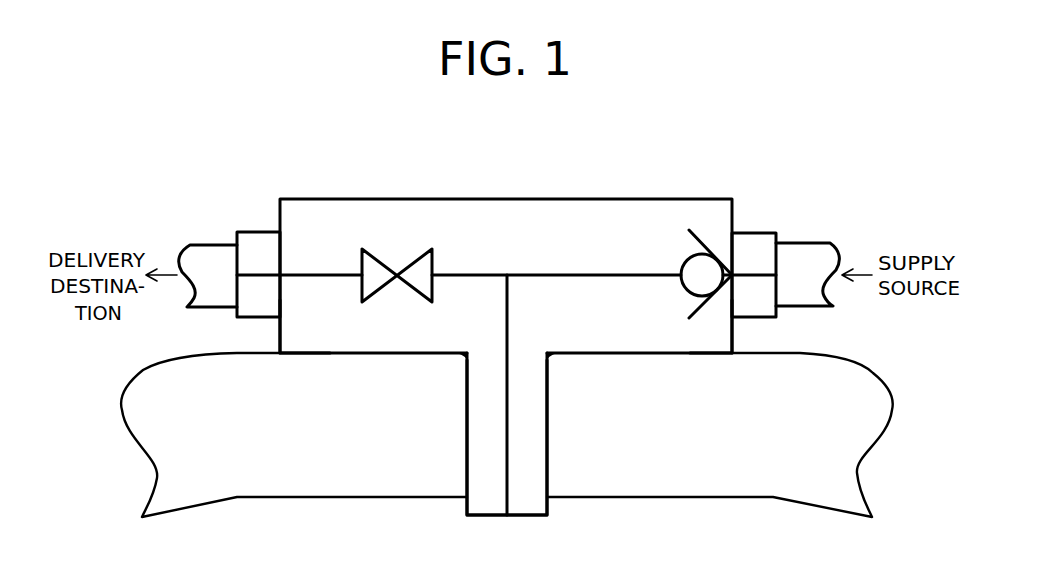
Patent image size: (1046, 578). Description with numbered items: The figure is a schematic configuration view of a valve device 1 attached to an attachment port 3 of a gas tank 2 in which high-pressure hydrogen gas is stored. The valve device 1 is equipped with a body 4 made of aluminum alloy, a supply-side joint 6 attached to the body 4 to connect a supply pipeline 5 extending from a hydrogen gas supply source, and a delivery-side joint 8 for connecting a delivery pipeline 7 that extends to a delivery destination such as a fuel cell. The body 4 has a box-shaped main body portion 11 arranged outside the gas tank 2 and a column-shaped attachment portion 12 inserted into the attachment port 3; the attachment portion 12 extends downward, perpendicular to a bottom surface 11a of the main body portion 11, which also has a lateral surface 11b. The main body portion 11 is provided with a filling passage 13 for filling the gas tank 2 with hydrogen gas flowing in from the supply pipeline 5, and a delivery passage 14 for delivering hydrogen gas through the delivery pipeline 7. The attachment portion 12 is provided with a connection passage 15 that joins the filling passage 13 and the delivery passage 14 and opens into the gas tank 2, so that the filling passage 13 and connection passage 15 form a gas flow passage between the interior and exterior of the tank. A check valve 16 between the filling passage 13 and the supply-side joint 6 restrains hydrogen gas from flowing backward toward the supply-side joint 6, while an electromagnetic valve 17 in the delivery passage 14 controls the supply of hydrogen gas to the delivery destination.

The valve device 1 is at (174, 129).
The gas tank 2 is at (172, 374).
The attachment port 3 is at (541, 396).
The body 4 is at (506, 357).
The supply pipeline 5 is at (802, 250).
The supply-side joint 6 is at (755, 244).
The delivery pipeline 7 is at (217, 256).
The delivery-side joint 8 is at (257, 241).
The main body portion 11 is at (413, 347).
The bottom surface 11a is at (328, 354).
The lateral surface 11b is at (733, 341).
The attachment portion 12 is at (473, 418).
The filling passage 13 is at (574, 273).
The delivery passage 14 is at (317, 273).
The connection passage 15 is at (508, 443).
The check valve 16 is at (700, 236).
The electromagnetic valve 17 is at (380, 258).